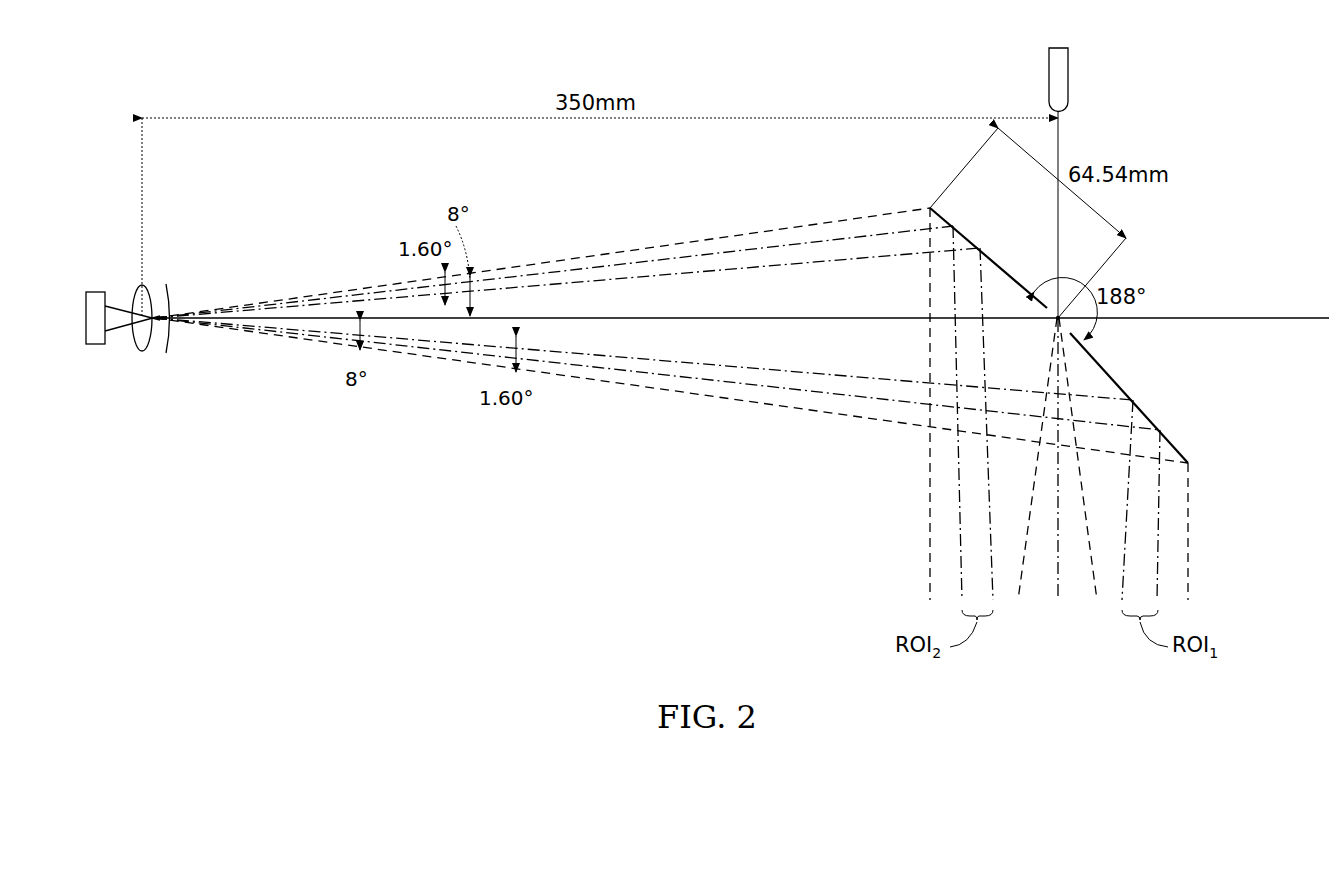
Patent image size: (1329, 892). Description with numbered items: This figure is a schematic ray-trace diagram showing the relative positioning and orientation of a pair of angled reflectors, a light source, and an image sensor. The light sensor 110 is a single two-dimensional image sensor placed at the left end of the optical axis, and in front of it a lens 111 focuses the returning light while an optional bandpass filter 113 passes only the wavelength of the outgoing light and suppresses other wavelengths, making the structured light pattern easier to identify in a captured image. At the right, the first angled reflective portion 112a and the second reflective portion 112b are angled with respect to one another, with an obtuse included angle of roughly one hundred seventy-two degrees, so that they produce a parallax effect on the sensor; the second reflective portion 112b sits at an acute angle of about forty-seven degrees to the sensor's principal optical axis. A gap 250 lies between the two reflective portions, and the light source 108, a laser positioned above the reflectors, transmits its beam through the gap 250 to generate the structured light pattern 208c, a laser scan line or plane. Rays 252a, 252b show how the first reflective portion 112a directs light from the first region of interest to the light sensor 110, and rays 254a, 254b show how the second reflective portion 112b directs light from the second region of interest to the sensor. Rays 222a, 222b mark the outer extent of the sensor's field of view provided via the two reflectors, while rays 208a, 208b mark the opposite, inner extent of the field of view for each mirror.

The light source 108 is at (1069, 76).
The light sensor 110 is at (97, 291).
The lens 111 is at (131, 350).
The bandpass filter 113 is at (170, 300).
The first angled reflective portion 112a is at (1125, 392).
The second reflective portion 112b is at (987, 256).
The gap 250 is at (1094, 328).
The ray 252a is at (1130, 475).
The ray 252b is at (1159, 540).
The ray 254a is at (990, 505).
The ray 254b is at (958, 464).
The ray 222a is at (930, 576).
The ray 222b is at (1190, 586).
The ray 208a is at (1096, 590).
The ray 208b is at (1028, 590).
The structured light pattern 208c is at (1060, 595).